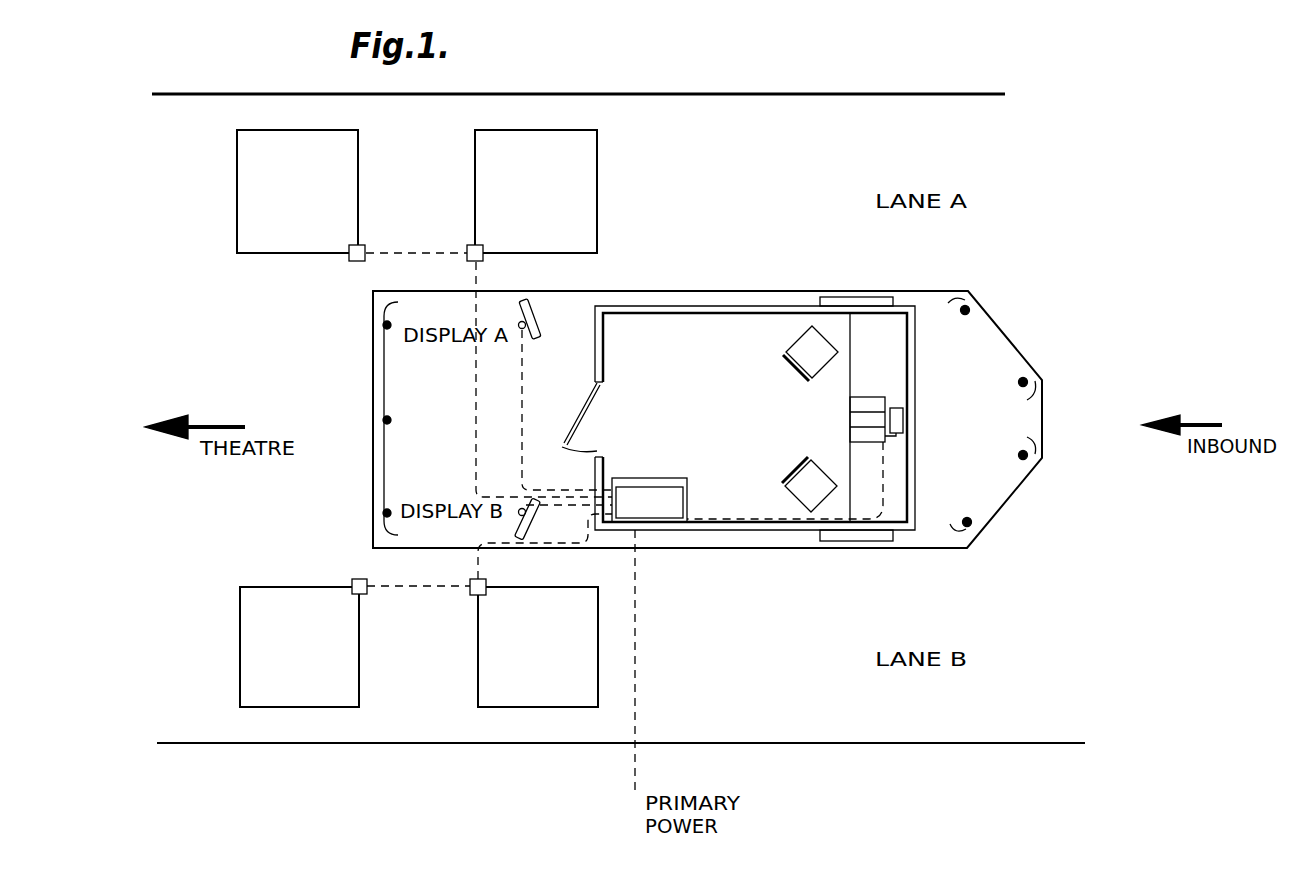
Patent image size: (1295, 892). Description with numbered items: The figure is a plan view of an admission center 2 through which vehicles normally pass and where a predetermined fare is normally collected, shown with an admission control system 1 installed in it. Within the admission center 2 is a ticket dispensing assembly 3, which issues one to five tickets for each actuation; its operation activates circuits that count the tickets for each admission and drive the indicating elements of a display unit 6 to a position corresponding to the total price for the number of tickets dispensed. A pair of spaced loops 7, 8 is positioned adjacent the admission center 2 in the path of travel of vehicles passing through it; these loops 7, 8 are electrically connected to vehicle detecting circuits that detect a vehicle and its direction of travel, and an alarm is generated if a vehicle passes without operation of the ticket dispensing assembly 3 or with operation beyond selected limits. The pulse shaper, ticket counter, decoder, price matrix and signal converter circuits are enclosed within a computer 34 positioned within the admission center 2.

The admission control system 1 is at (772, 134).
The admission center 2 is at (913, 303).
The ticket dispensing assembly 3 is at (857, 397).
The display unit 6 is at (540, 315).
The loop 7 is at (475, 201).
The loop 8 is at (237, 203).
The computer 34 is at (667, 478).